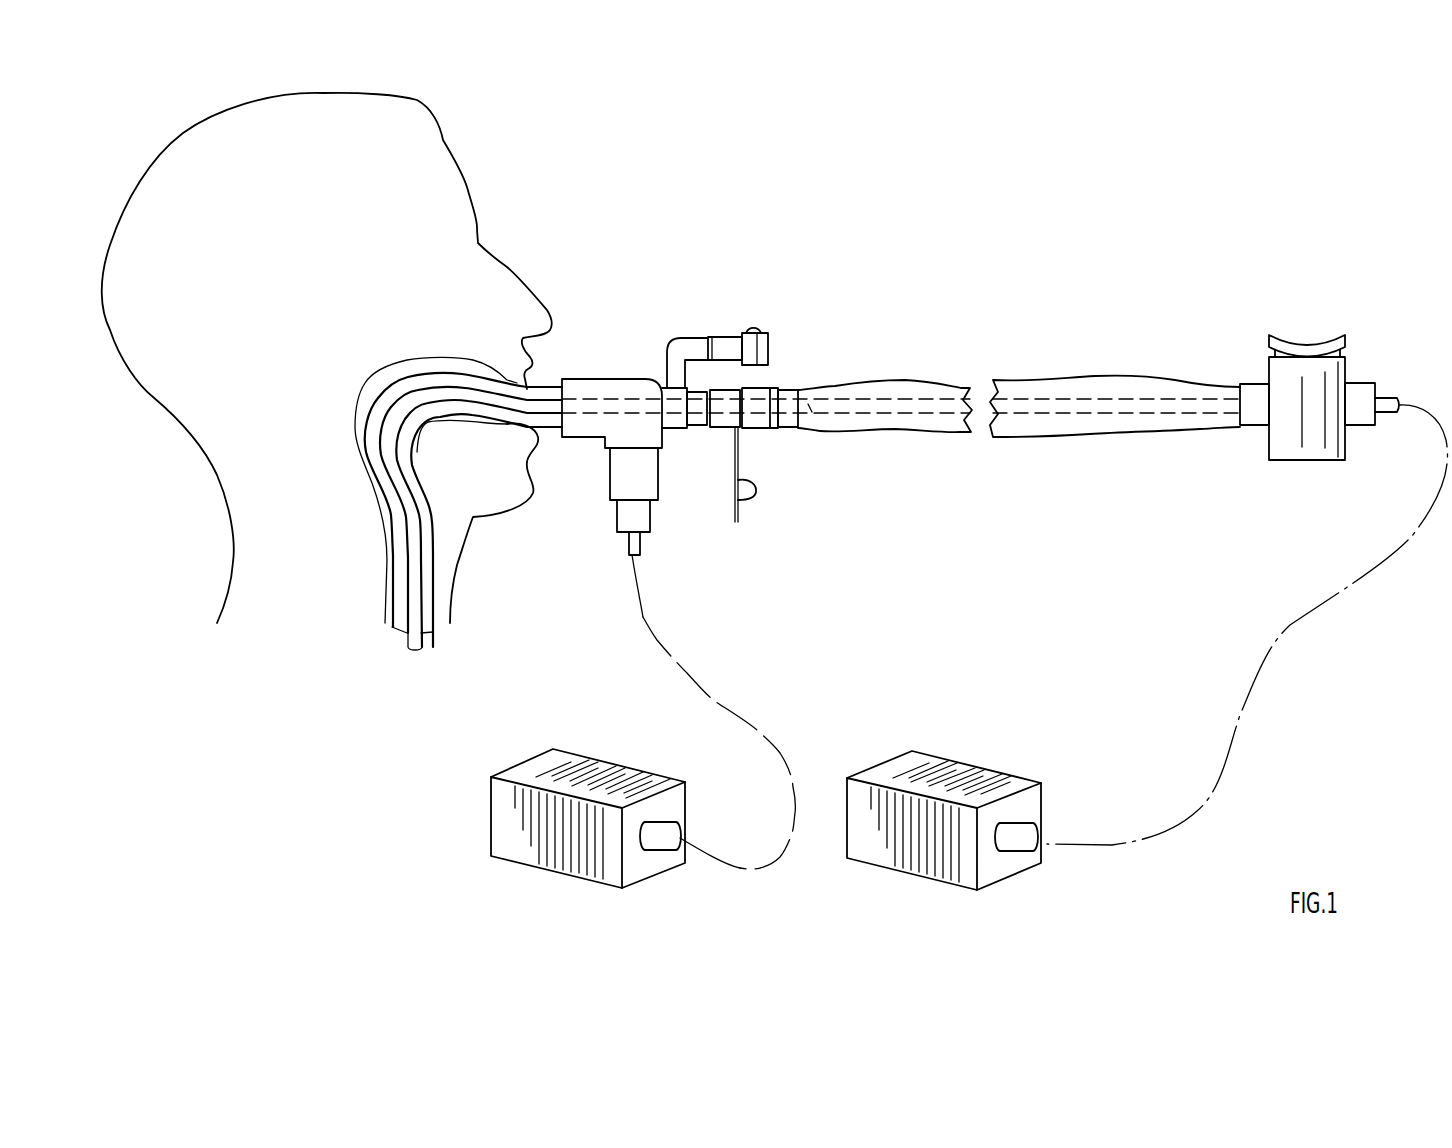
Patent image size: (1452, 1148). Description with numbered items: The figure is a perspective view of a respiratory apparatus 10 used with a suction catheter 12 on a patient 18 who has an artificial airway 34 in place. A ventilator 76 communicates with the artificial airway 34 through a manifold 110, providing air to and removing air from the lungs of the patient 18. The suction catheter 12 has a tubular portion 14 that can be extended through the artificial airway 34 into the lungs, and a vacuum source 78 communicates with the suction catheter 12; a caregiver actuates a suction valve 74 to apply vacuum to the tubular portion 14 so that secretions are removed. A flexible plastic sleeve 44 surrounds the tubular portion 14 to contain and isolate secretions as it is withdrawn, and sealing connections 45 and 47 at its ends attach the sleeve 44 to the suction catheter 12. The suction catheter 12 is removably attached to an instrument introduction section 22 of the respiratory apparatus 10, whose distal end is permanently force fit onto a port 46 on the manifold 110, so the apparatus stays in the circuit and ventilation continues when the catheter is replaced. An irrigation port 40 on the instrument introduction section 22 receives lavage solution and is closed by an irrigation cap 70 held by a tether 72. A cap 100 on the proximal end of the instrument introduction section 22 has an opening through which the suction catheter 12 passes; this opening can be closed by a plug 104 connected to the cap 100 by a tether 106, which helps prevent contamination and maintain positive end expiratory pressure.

The respiratory apparatus 10 is at (672, 300).
The suction catheter 12 is at (788, 420).
The tubular portion 14 is at (666, 484).
The patient 18 is at (445, 175).
The instrument introduction section 22 is at (700, 427).
The artificial airway 34 is at (430, 626).
The irrigation port 40 is at (722, 338).
The flexible plastic sleeve 44 is at (1132, 432).
The sealing connection 45 is at (808, 408).
The port 46 is at (652, 385).
The sealing connection 47 is at (1226, 400).
The irrigation cap 70 is at (768, 350).
The tether 72 is at (754, 328).
The suction valve 74 is at (1291, 455).
The ventilator 76 is at (503, 822).
The vacuum source 78 is at (975, 776).
The cap 100 is at (720, 385).
The plug 104 is at (750, 490).
The tether 106 is at (740, 455).
The manifold 110 is at (618, 480).